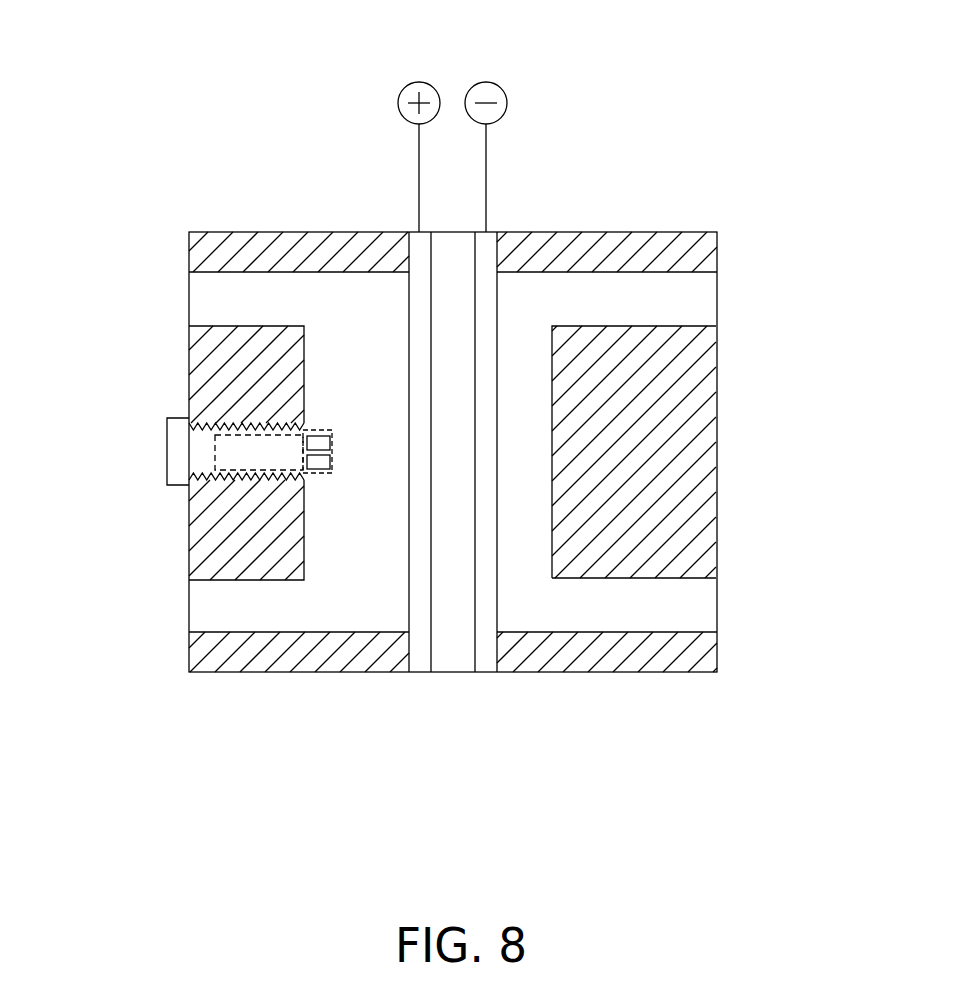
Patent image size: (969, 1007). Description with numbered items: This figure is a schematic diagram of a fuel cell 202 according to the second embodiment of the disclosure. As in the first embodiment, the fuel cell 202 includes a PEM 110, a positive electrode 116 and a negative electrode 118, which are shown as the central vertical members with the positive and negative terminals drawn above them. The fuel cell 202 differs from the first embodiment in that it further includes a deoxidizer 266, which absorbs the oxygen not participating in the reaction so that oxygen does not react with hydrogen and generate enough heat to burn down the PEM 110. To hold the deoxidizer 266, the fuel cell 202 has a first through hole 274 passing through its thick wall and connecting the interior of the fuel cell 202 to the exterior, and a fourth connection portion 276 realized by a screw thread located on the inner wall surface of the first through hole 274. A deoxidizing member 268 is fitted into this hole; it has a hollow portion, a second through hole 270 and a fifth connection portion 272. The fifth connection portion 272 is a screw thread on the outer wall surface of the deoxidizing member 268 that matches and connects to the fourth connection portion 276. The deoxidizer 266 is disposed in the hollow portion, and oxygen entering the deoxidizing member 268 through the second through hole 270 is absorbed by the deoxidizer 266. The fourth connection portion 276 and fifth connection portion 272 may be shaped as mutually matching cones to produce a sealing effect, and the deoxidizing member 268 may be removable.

The fuel cell 202 is at (824, 30).
The PEM 110 is at (457, 665).
The positive electrode 116 is at (417, 672).
The negative electrode 118 is at (487, 672).
The deoxidizer 266 is at (238, 448).
The deoxidizing member 268 is at (167, 477).
The second through hole 270 is at (317, 432).
The fifth connection portion 272 is at (213, 479).
The first through hole 274 is at (190, 463).
The fourth connection portion 276 is at (218, 479).